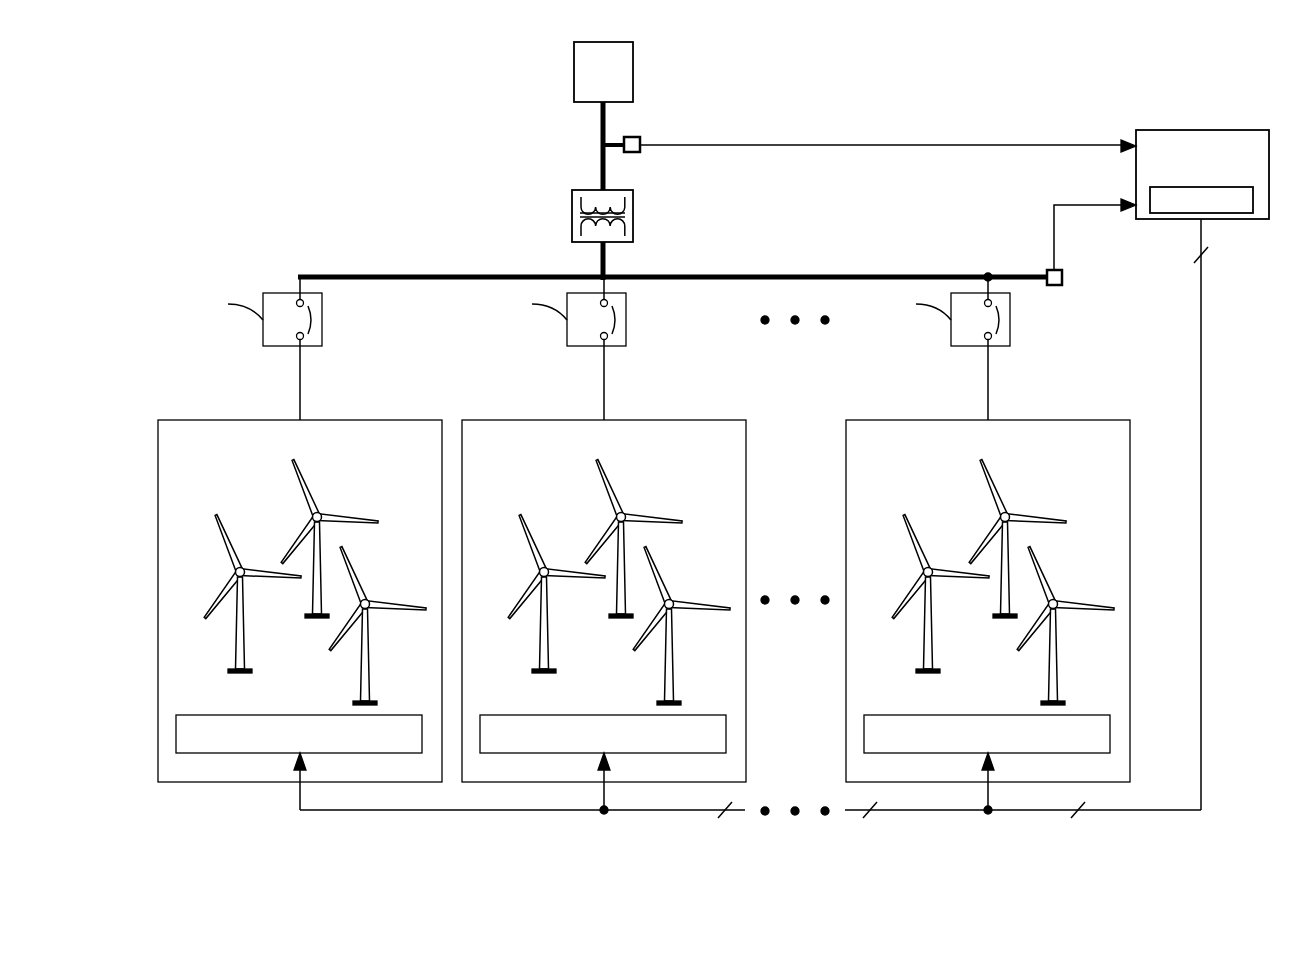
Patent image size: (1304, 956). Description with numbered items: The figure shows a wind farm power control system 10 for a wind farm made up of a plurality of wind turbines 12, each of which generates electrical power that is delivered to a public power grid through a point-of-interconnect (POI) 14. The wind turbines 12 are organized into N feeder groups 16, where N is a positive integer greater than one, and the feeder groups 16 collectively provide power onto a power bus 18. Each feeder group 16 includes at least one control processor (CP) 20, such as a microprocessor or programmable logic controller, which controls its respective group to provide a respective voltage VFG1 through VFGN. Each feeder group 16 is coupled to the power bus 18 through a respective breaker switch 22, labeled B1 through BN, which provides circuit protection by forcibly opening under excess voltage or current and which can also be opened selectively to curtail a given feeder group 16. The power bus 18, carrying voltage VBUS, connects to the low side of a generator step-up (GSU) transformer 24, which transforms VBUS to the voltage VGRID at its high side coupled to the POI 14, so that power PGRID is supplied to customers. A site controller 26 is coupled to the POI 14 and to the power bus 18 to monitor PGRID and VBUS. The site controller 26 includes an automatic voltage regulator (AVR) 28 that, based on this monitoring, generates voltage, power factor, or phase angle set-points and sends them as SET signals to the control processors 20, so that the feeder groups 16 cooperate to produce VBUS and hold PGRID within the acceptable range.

The wind farm power control system 10 is at (249, 73).
The wind turbine 12 is at (304, 489).
The point-of-interconnect (POI) 14 is at (574, 82).
The feeder group 16 is at (218, 420).
The power bus 18 is at (318, 276).
The control processor (CP) 20 is at (233, 715).
The breaker switch 22 is at (605, 349).
The generator step-up (GSU) transformer 24 is at (572, 204).
The site controller 26 is at (1199, 178).
The automatic voltage regulator (AVR) 28 is at (1173, 214).